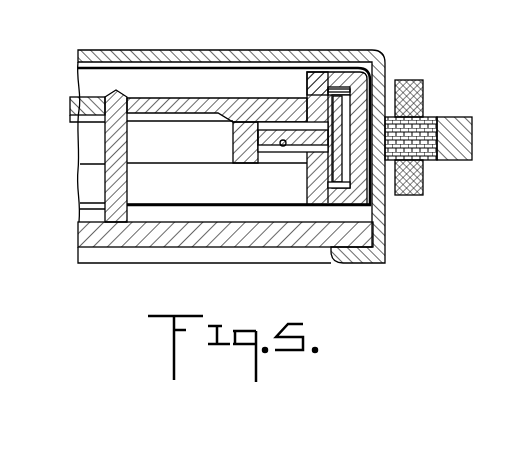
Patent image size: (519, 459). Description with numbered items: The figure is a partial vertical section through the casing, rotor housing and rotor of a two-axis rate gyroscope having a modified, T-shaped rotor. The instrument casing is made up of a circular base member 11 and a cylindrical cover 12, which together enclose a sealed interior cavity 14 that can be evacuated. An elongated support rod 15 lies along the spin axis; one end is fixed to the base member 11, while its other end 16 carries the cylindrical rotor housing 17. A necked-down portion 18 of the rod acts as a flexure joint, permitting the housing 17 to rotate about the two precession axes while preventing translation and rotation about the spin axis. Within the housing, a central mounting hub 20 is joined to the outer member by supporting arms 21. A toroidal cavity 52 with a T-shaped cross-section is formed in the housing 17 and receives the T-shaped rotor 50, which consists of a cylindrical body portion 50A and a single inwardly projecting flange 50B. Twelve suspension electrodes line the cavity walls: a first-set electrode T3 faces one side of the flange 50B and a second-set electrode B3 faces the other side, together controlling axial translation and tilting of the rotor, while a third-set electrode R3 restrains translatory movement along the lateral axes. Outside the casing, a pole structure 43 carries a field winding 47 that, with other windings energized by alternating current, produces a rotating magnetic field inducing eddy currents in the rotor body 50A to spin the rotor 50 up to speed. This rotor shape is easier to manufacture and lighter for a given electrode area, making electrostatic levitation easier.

The base member 11 is at (287, 242).
The cylindrical cover 12 is at (250, 0).
The sealed interior space or cavity 14 is at (148, 155).
The support member or rod 15 is at (110, 183).
The other end of the support rod 16 is at (110, 92).
The rotor housing 17 is at (342, 63).
The necked-down portion (flexure joint) 18 is at (110, 135).
The central mounting hub 20 is at (125, 96).
The supporting arms 21 is at (174, 97).
The pole structure 43 is at (435, 123).
The field winding 47 is at (489, 28).
The T-shaped rotor 50 is at (325, 159).
The cylindrical body portion 50A is at (353, 118).
The inwardly projecting flange 50B is at (233, 140).
The toroidal cavity 52 is at (333, 72).
The suspension electrode T3 is at (283, 140).
The suspension electrode B3 is at (288, 163).
The suspension electrode R3 is at (344, 166).